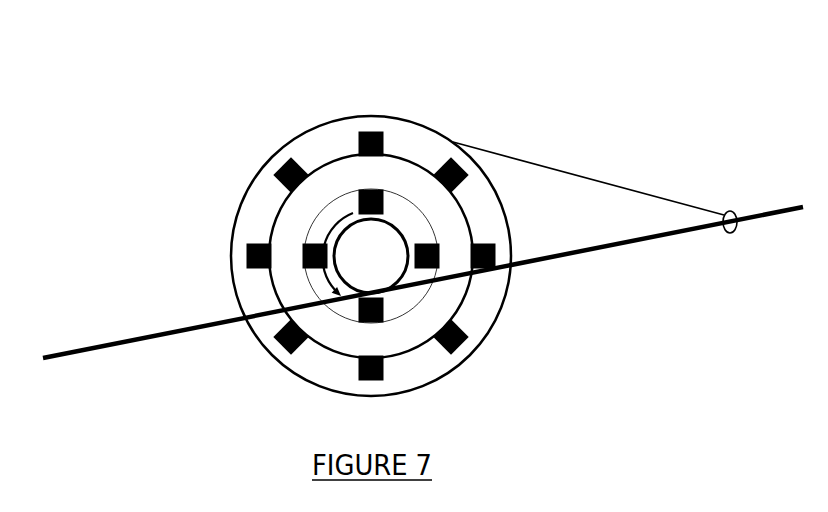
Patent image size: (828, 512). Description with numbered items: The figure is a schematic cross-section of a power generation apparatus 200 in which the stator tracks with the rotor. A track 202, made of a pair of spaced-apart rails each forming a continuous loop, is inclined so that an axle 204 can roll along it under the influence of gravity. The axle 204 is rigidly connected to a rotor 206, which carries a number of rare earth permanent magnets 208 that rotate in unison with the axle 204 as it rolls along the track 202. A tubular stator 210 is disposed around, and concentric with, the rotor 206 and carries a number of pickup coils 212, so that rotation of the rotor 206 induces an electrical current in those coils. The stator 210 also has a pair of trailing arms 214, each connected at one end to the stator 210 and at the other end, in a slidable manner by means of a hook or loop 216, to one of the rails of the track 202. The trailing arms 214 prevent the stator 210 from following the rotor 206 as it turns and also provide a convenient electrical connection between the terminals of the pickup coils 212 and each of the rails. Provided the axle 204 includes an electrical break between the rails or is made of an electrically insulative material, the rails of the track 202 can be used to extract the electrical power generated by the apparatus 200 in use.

The power generation apparatus 200 is at (419, 227).
The track 202 is at (122, 338).
The axle 204 is at (387, 273).
The rotor 206 is at (347, 308).
The rare earth permanent magnets 208 is at (360, 195).
The tubular stator 210 is at (263, 165).
The pickup coils 212 is at (292, 165).
The trailing arms 214 is at (592, 178).
The hook or loop 216 is at (735, 212).